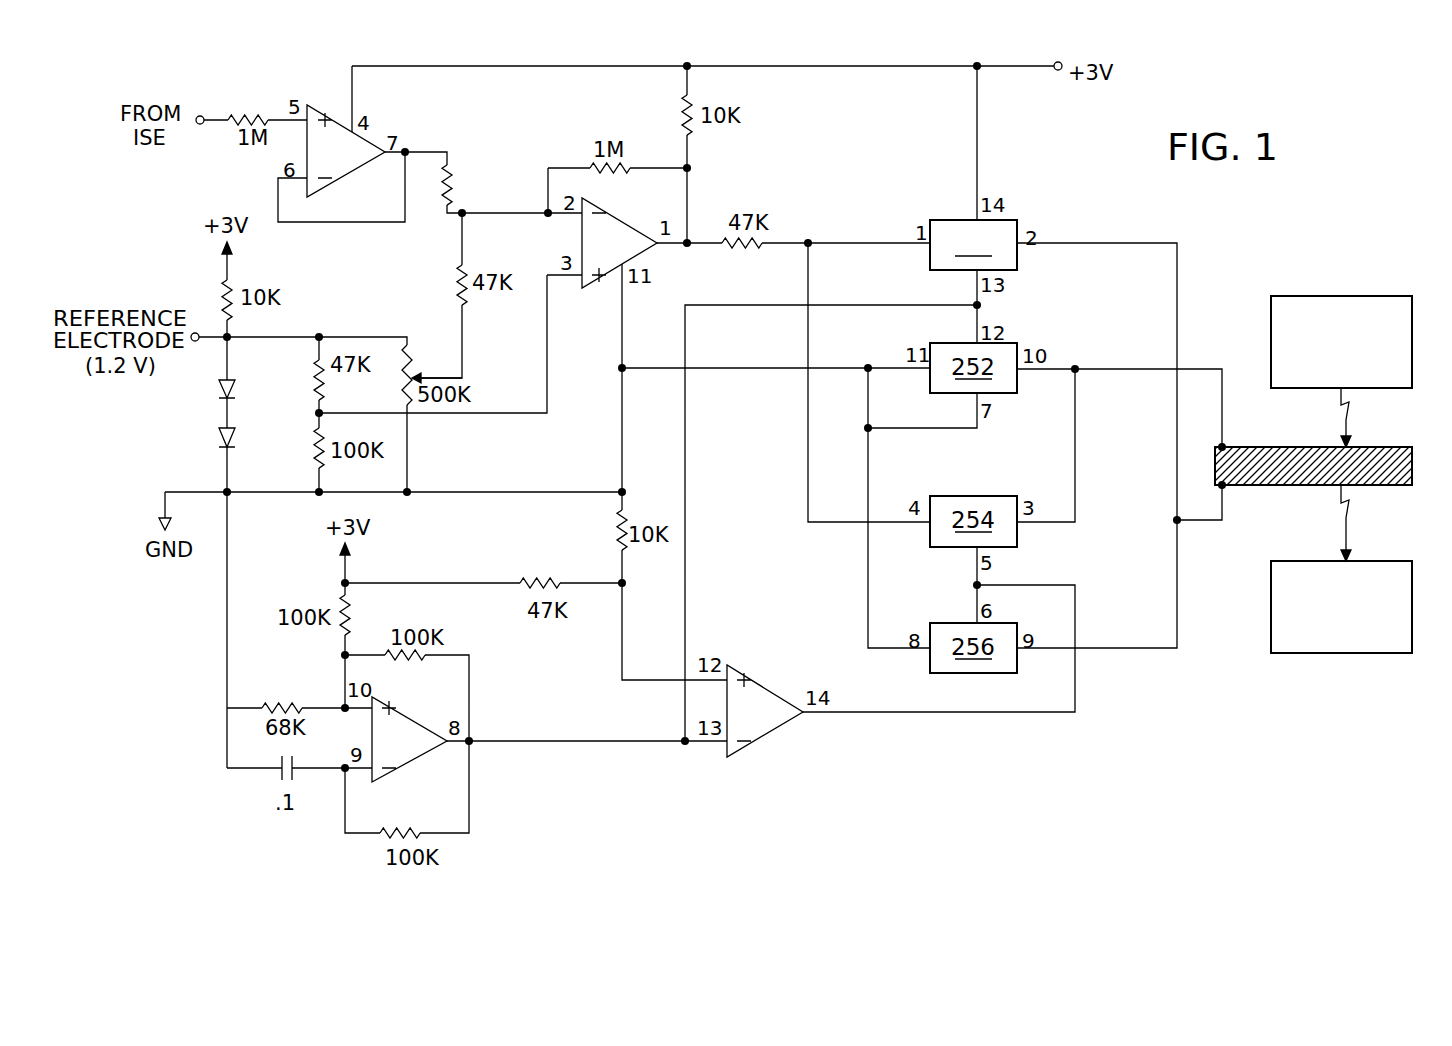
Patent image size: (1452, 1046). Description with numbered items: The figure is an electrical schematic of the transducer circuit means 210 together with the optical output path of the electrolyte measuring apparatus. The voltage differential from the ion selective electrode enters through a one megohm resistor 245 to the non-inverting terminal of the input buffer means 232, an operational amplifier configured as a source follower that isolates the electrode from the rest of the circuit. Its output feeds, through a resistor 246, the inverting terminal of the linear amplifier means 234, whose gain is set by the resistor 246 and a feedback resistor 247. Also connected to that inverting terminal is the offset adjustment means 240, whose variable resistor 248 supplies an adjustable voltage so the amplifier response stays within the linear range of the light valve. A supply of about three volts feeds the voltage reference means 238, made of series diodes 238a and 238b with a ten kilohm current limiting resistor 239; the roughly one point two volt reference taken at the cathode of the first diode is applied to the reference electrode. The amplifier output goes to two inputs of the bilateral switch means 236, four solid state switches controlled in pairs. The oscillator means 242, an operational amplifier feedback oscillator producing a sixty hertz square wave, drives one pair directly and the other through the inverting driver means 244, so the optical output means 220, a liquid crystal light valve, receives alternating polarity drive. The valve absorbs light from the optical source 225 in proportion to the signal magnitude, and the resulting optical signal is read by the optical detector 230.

The 1 Mohm resistor 245 is at (236, 110).
The input buffer means 232 is at (372, 134).
The resistor 246 is at (451, 175).
The feedback resistor 247 is at (624, 162).
The linear amplifier means 234 is at (610, 214).
The bilateral switch means 236 is at (1010, 212).
The current limiting resistor 239 is at (239, 284).
The voltage reference means 238 is at (206, 395).
The first diode 238a is at (240, 390).
The second diode 238b is at (200, 411).
The offset adjustment means 240 is at (466, 371).
The variable resistor 248 is at (402, 380).
The oscillator means 242 is at (472, 801).
The inverting driver means 244 is at (752, 672).
The transducer circuit means 210 is at (794, 707).
The optical source 225 is at (1352, 296).
The optical output means 220 is at (1376, 447).
The optical detector 230 is at (1335, 655).